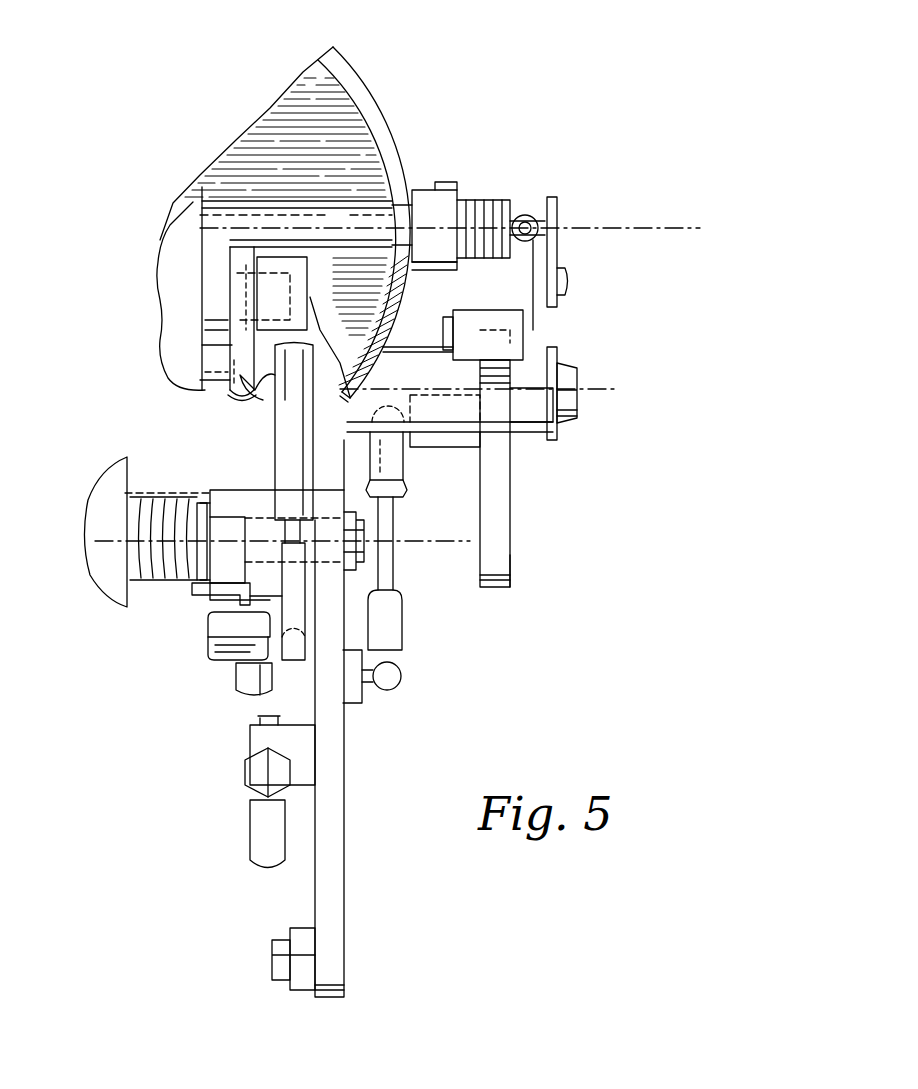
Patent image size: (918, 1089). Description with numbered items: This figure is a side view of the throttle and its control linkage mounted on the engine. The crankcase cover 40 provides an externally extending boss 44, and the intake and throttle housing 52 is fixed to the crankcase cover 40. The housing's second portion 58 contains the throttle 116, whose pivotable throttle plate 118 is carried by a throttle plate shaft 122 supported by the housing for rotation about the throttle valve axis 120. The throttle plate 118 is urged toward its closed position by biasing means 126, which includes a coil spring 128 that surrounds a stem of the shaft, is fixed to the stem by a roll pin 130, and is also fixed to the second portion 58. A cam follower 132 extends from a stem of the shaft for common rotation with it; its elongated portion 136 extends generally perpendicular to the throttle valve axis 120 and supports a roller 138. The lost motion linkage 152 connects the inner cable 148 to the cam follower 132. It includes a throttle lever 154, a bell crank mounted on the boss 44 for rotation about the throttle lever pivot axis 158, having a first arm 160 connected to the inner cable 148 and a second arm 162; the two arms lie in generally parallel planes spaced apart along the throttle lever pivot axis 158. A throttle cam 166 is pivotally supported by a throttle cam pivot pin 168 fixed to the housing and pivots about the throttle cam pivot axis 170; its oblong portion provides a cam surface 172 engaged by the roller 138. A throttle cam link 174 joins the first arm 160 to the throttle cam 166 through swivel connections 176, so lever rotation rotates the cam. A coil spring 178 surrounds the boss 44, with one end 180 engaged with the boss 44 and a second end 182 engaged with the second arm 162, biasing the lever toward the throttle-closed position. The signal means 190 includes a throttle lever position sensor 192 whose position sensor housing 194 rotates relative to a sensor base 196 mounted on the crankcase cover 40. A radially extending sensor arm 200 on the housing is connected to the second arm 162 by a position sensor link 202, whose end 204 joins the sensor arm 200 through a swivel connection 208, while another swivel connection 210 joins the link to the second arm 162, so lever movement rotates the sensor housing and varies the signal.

The crankcase cover 40 is at (175, 207).
The boss 44 is at (190, 497).
The intake and throttle housing 52 is at (542, 152).
The second portion 58 is at (372, 108).
The throttle 116 is at (472, 92).
The throttle plate 118 is at (280, 104).
The throttle valve axis 120 is at (648, 230).
The throttle plate shaft 122 is at (326, 208).
The means for biasing the throttle plate 126 is at (568, 195).
The coil spring 128 is at (480, 195).
The roll pin 130 is at (537, 243).
The cam follower 132 is at (560, 214).
The elongated portion 136 is at (566, 286).
The roller 138 is at (492, 318).
The inner cable 148 is at (305, 992).
The lost motion linkage 152 is at (518, 564).
The throttle lever 154 is at (335, 775).
The throttle lever pivot axis 158 is at (436, 540).
The first arm 160 is at (325, 875).
The second arm 162 is at (226, 500).
The throttle cam 166 is at (520, 552).
The throttle cam pivot pin 168 is at (565, 425).
The throttle cam pivot axis 170 is at (608, 388).
The cam surface 172 is at (505, 494).
The throttle cam link 174 is at (405, 625).
The swivel connections 176 is at (398, 690).
The coil spring 178 is at (110, 541).
The end 180 is at (118, 493).
The second end 182 is at (200, 592).
The means for providing a variable input signal 190 is at (135, 208).
The throttle lever position sensor 192 is at (212, 298).
The position sensor housing 194 is at (302, 285).
The sensor base 196 is at (207, 326).
The sensor arm 200 is at (226, 345).
The position sensor link 202 is at (277, 444).
The end 204 is at (295, 372).
The swivel connection 208 is at (217, 385).
The swivel connection 210 is at (230, 668).